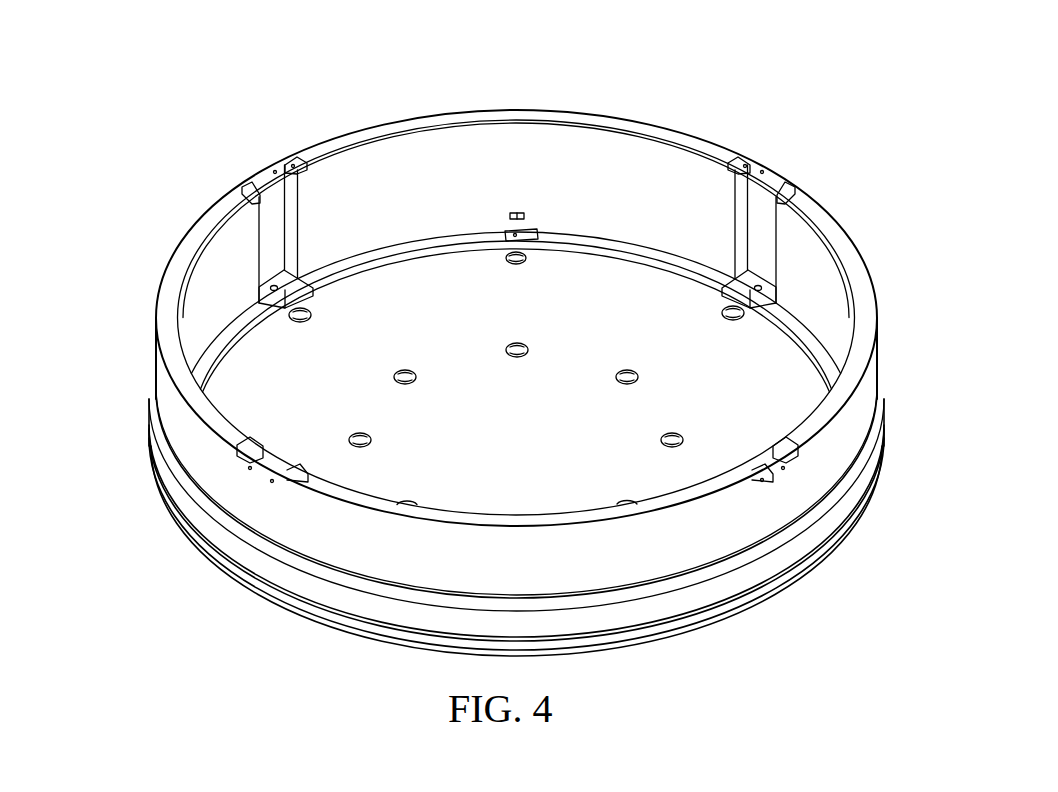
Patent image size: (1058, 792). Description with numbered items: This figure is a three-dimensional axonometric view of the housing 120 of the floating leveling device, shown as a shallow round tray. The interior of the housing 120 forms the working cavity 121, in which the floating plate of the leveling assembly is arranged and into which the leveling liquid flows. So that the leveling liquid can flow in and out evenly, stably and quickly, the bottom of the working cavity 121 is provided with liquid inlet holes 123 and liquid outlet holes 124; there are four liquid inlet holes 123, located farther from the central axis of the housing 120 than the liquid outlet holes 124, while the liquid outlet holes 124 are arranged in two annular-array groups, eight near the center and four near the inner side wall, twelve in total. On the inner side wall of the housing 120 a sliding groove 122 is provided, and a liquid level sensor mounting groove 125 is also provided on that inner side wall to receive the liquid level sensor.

The housing 120 is at (358, 126).
The working cavity 121 is at (305, 362).
The sliding groove 122 is at (273, 228).
The liquid inlet hole 123 is at (515, 254).
The liquid outlet hole 124 is at (360, 440).
The liquid level sensor mounting groove 125 is at (523, 212).